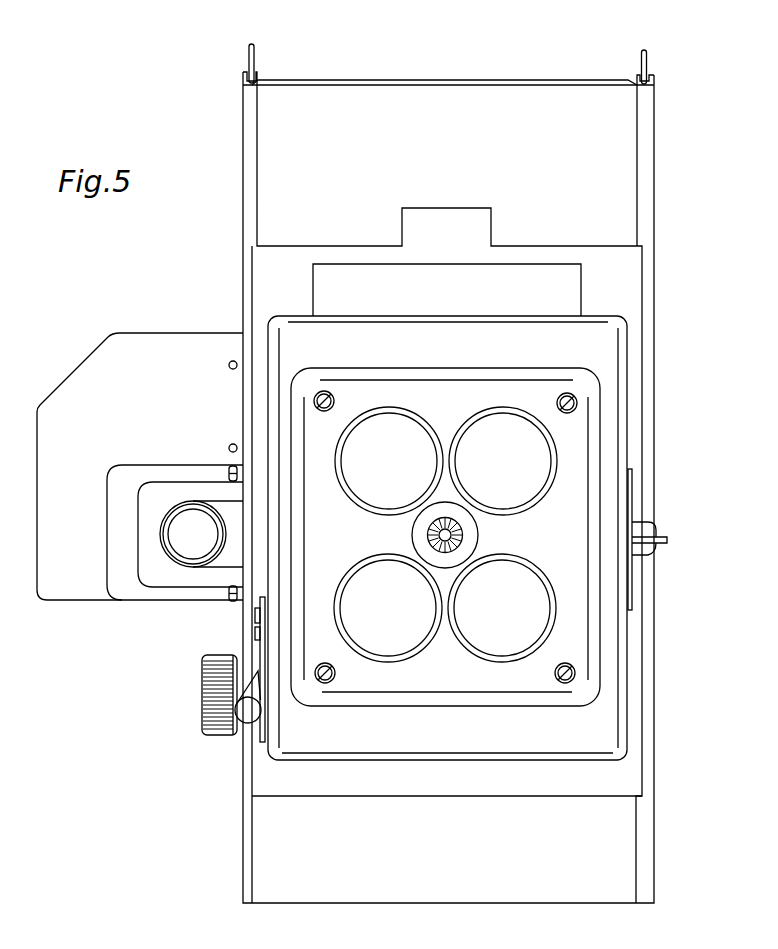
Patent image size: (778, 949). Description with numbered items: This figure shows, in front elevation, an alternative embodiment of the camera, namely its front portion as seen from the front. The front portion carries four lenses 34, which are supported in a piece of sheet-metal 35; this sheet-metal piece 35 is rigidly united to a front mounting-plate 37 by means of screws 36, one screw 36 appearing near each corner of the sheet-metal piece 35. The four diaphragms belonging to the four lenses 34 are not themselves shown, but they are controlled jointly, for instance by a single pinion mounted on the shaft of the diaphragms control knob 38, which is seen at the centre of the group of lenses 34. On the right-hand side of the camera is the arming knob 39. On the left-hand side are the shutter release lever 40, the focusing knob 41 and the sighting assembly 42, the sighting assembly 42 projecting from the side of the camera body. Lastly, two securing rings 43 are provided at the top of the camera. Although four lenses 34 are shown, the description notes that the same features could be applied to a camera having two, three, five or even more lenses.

The lenses 34 is at (383, 487).
The piece of sheet-metal 35 is at (447, 395).
The screws 36 is at (334, 398).
The front mounting-plate 37 is at (370, 331).
The diaphragms control knob 38 is at (463, 534).
The arming knob 39 is at (655, 538).
The shutter release lever 40 is at (252, 703).
The focusing knob 41 is at (215, 713).
The sighting assembly 42 is at (145, 572).
The securing rings 43 is at (643, 58).